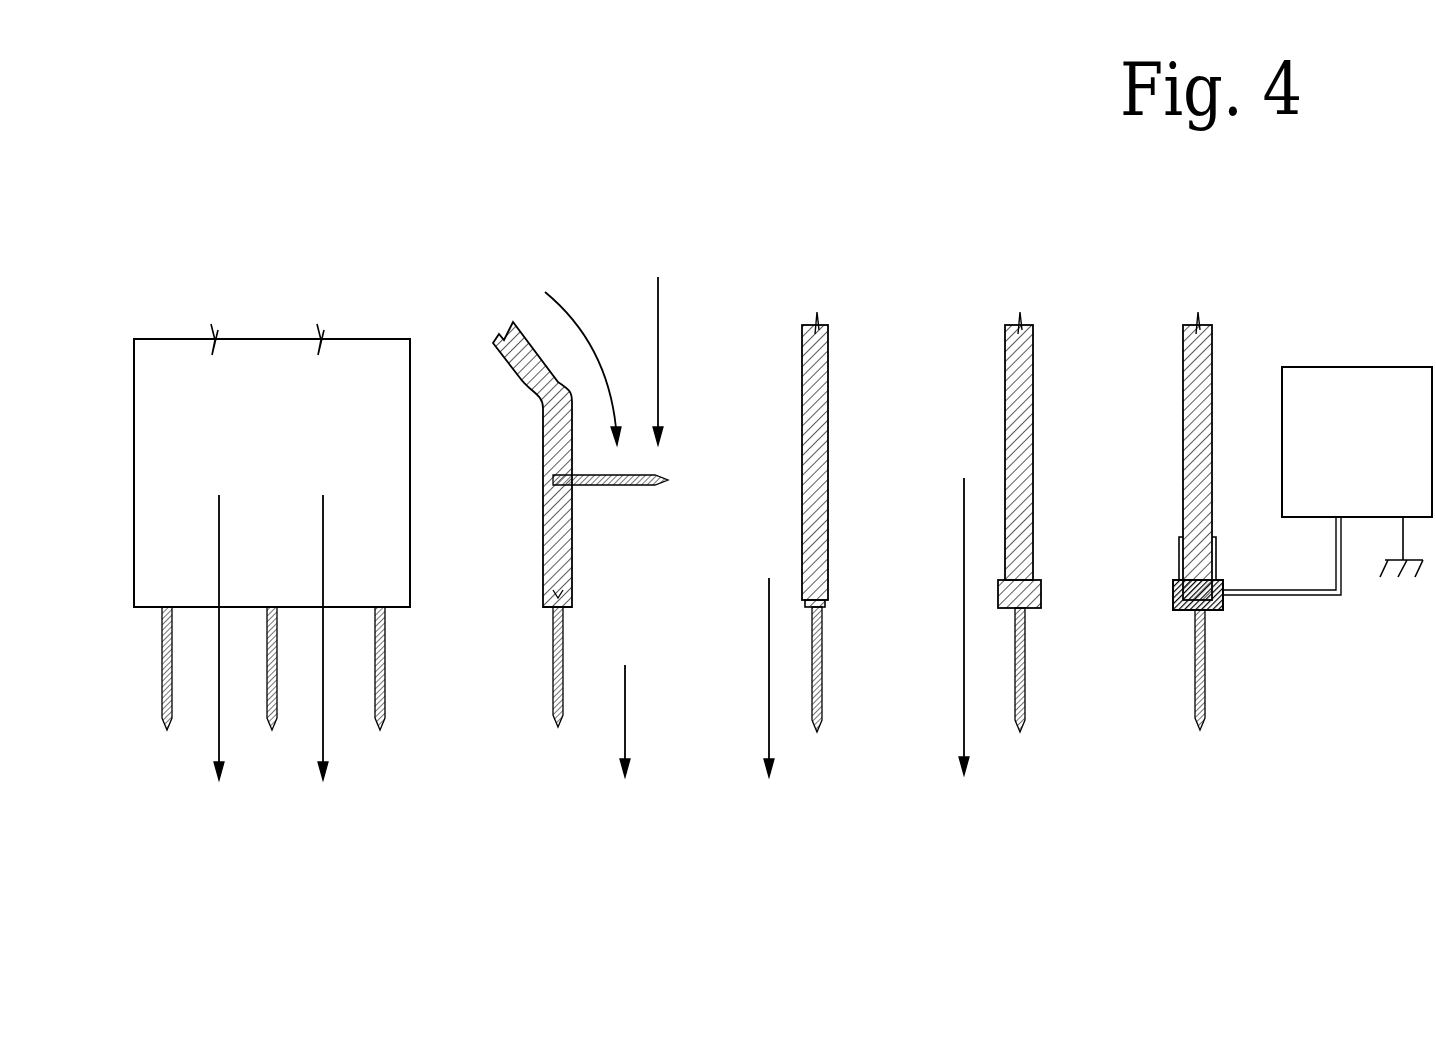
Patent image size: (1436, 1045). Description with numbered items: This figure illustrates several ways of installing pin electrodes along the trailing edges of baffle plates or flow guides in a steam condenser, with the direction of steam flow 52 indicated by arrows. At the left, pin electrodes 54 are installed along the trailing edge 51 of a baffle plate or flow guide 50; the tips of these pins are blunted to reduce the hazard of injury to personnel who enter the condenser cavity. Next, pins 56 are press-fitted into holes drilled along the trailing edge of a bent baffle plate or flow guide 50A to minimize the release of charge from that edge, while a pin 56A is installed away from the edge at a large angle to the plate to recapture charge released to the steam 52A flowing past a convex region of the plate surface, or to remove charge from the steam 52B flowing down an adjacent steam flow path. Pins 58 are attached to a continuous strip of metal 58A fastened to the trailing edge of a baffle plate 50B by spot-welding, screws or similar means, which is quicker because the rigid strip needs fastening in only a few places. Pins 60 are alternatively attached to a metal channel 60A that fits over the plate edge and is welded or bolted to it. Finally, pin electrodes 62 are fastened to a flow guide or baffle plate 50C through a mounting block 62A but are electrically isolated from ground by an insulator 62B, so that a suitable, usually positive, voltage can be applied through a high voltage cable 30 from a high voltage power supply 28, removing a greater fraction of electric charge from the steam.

The high voltage power supply 28 is at (1393, 367).
The high voltage cable 30 is at (1288, 594).
The baffle plate or flow guide 50 is at (248, 357).
The baffle plate or flow guide 50A is at (543, 440).
The baffle plate 50B is at (1005, 387).
The flow guide or baffle plate 50C is at (1185, 385).
The trailing edge 51 is at (296, 604).
The direction of steam flow 52 is at (219, 740).
The steam flowing past a convex region 52A is at (573, 317).
The steam flowing down a steam flow path 52B is at (658, 303).
The pin electrodes 54 is at (383, 668).
The pins 56 is at (563, 628).
The pins 56A is at (603, 487).
The pins 58 is at (822, 687).
The continuous strip of metal 58A is at (823, 607).
The pins 60 is at (1023, 655).
The metal channel 60A is at (1041, 585).
The pin electrodes 62 is at (1205, 703).
The electrode mounting block 62A is at (1212, 610).
The insulator 62B is at (1178, 565).